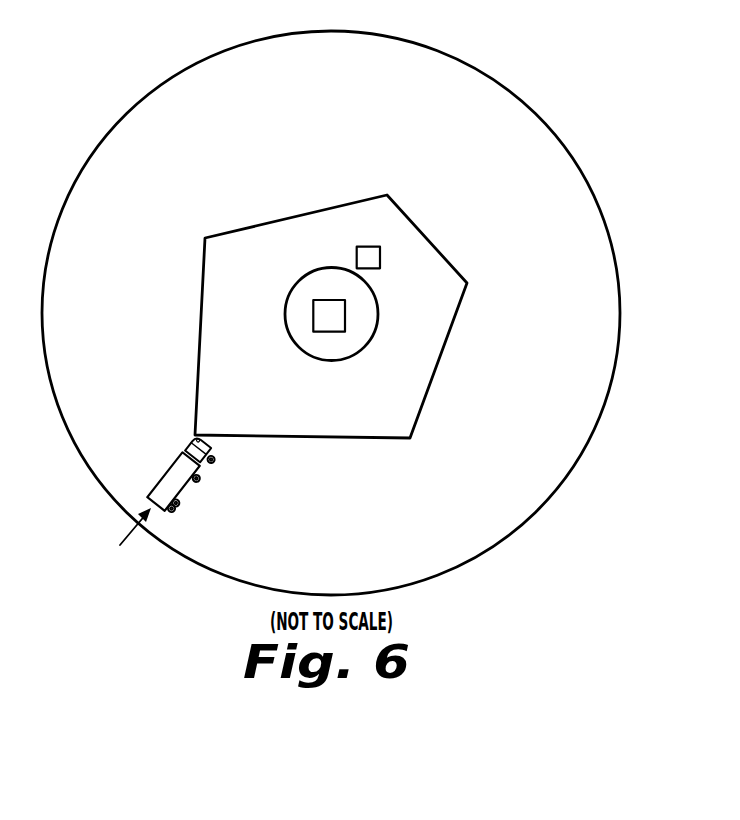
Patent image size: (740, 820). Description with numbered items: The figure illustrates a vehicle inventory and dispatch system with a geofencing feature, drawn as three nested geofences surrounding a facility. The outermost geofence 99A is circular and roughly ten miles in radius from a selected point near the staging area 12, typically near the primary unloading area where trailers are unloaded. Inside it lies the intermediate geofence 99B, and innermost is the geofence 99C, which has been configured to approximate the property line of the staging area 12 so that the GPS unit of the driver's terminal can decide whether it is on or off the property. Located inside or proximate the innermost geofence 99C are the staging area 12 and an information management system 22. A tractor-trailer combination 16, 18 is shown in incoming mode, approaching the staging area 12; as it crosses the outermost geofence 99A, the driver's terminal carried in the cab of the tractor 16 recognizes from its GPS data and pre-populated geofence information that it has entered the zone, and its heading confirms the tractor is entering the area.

The outermost geofence 99A is at (485, 72).
The intermediate geofence 99B is at (433, 243).
The innermost geofence 99C is at (287, 335).
The staging area 12 is at (339, 325).
The information management system 22 is at (370, 260).
The tractor 16 is at (188, 448).
The trailer 18 is at (157, 482).